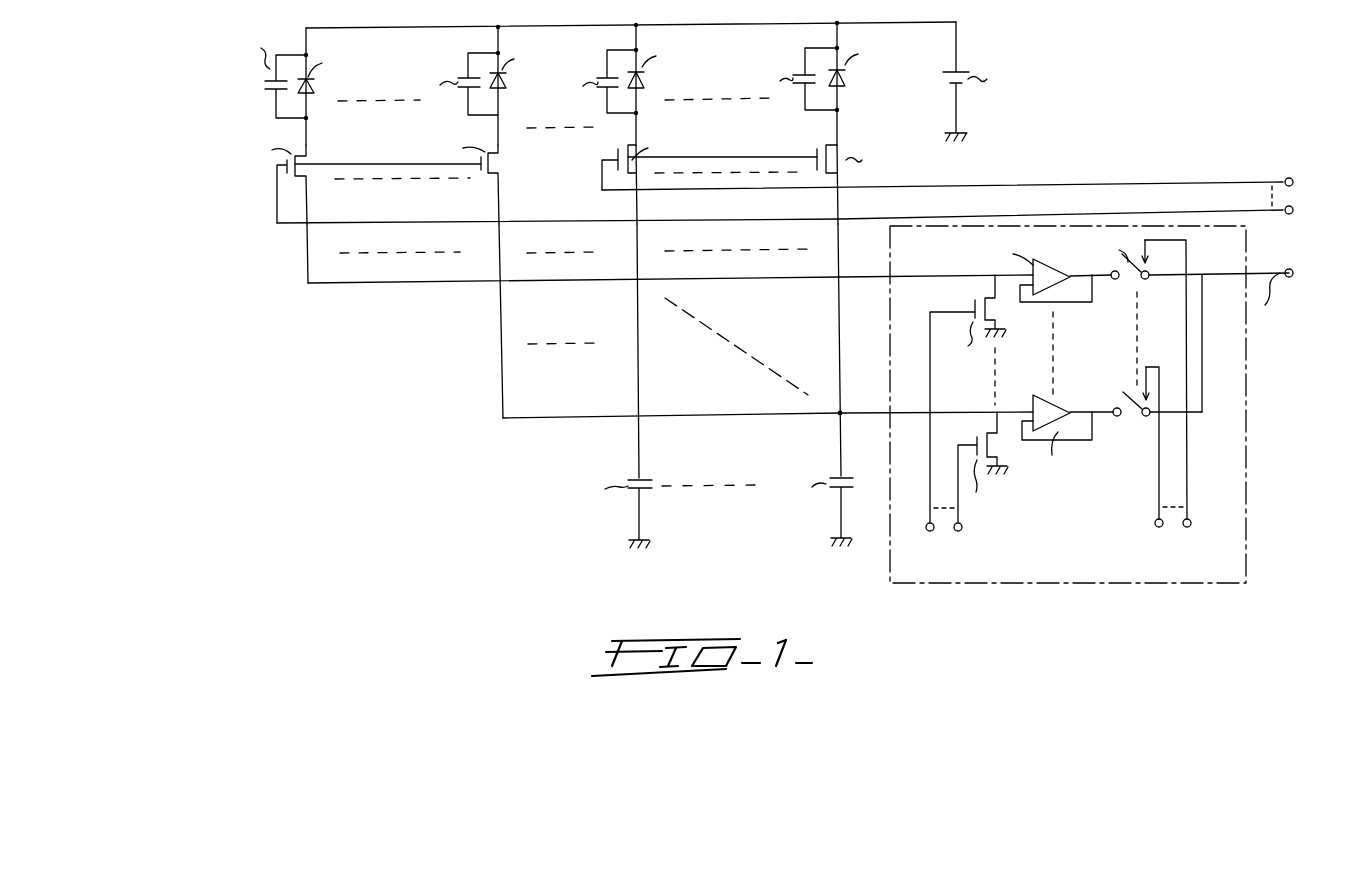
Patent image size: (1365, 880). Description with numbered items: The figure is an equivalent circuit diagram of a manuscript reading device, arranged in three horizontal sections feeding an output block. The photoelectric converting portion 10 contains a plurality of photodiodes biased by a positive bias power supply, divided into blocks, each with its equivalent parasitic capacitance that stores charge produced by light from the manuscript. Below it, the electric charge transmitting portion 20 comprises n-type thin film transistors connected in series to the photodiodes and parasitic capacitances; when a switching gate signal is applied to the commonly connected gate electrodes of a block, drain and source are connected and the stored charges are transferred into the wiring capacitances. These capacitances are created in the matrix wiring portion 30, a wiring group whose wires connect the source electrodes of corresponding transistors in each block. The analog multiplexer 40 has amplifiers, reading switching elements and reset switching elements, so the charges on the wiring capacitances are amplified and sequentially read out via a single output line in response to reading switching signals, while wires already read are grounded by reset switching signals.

The photoelectric converting portion 10 is at (210, 23).
The electric charge transmitting portion 20 is at (210, 143).
The matrix wiring portion 30 is at (215, 592).
The analog multiplexer 40 is at (1247, 398).